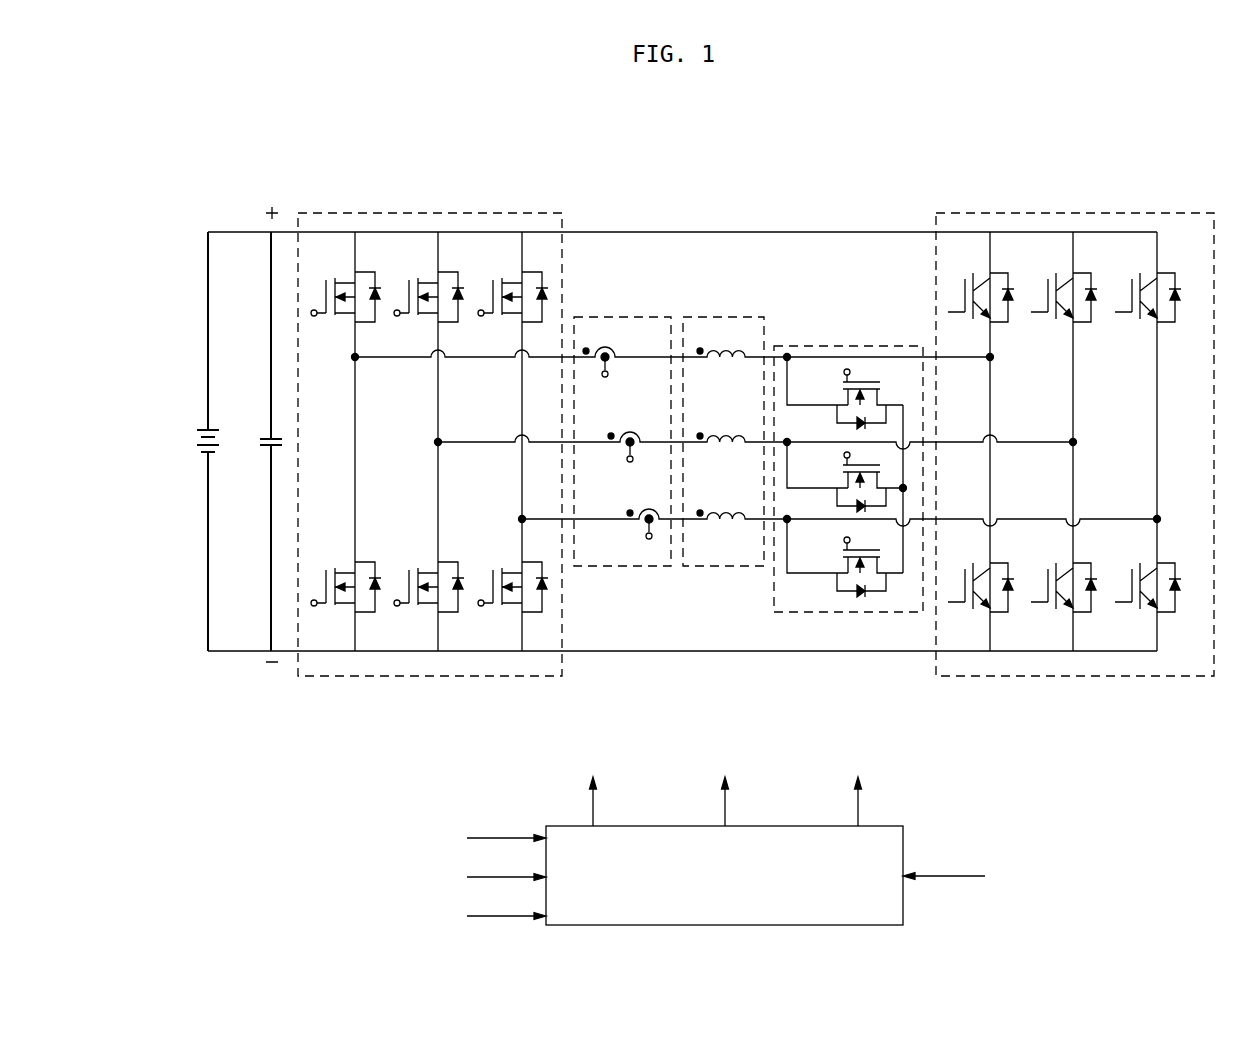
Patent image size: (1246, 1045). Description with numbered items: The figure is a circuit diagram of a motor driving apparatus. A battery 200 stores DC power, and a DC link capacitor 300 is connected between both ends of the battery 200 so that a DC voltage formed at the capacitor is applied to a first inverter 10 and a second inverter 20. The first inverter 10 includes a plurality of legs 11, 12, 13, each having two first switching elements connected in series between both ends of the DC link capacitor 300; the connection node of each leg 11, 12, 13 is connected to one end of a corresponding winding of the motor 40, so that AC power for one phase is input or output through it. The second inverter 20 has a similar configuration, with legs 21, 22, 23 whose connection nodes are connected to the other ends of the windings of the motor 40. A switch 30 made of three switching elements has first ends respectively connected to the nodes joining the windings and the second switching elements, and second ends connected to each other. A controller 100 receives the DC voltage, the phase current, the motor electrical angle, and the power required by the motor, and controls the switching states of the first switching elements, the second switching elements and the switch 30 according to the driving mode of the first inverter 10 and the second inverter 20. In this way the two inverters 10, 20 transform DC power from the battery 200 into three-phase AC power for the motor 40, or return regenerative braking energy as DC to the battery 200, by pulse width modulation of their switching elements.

The first inverter 10 is at (430, 480).
The first leg 11 is at (355, 663).
The second leg 12 is at (438, 663).
The third leg 13 is at (522, 663).
The second inverter 20 is at (1073, 480).
The first leg 21 is at (990, 663).
The second leg 22 is at (1073, 663).
The third leg 23 is at (1157, 663).
The switch 30 is at (886, 346).
The motor 40 is at (732, 317).
The controller 100 is at (903, 912).
The battery 200 is at (200, 430).
The DC link capacitor 300 is at (266, 438).